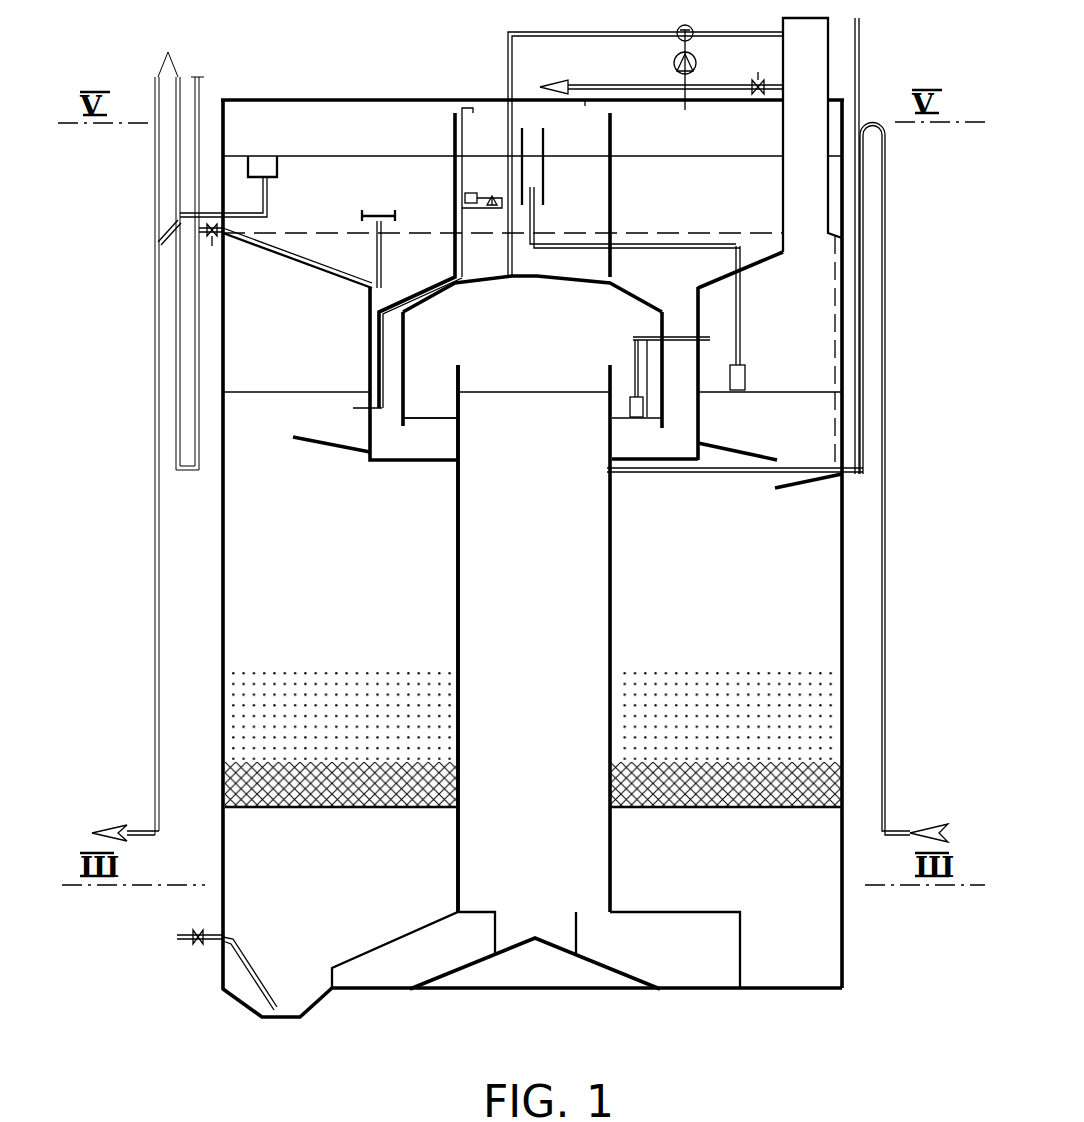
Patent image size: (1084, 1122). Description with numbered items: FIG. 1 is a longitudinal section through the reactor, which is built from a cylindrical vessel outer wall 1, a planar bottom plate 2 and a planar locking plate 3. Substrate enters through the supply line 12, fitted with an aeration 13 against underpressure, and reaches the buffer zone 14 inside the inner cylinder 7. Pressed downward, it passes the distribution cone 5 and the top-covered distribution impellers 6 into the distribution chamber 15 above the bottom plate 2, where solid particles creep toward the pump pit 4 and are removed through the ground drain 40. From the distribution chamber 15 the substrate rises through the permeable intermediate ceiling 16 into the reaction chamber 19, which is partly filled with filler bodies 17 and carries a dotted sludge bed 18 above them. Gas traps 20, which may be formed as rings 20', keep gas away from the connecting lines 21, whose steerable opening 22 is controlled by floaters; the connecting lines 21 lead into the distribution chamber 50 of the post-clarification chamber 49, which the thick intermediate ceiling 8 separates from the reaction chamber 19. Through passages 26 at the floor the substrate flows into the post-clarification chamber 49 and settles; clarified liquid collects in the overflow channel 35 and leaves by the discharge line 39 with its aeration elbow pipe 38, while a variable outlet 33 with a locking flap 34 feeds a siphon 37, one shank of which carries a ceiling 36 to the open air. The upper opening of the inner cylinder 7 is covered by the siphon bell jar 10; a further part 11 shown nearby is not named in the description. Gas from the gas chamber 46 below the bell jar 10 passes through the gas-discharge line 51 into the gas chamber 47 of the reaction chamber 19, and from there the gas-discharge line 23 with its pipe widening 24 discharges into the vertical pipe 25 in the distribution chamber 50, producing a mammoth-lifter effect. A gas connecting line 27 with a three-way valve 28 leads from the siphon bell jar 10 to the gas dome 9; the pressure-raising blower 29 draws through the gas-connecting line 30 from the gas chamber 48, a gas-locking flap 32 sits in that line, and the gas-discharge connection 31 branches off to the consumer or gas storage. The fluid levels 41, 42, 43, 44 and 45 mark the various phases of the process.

The vessel outer wall 1 is at (845, 960).
The bottom plate 2 is at (785, 992).
The locking plate 3 is at (322, 100).
The pump pit 4 is at (300, 1012).
The distribution cone 5 is at (535, 963).
The distribution impellers 6 is at (408, 939).
The inner cylinder 7 is at (461, 865).
The intermediate ceiling 8 is at (257, 249).
The gas dome 9 is at (812, 135).
The siphon bell jar 10 is at (405, 345).
The partition wall 11 is at (612, 133).
The supply line 12 is at (904, 483).
The aeration 13 is at (860, 42).
The buffer zone 14 is at (534, 638).
The distribution chamber 15 is at (719, 899).
The permeable intermediate ceiling 16 is at (668, 810).
The filler bodies 17 is at (533, 784).
The sludge bed 18 is at (534, 715).
The reaction chamber 19 is at (692, 644).
The gas traps 20 is at (331, 438).
The ring 20' is at (770, 464).
The connecting lines 21 is at (394, 303).
The steerable opening 22 is at (502, 196).
The gas-discharge line 23 is at (742, 318).
The pipe widening 24 is at (747, 378).
The vertical pipe 25 is at (543, 145).
The passages 26 is at (612, 283).
The gas connecting line 27 is at (512, 56).
The three-way valve 28 is at (685, 24).
The pressure-raising blower 29 is at (696, 58).
The gas-connecting line 30 is at (590, 104).
The gas-discharge connection 31 is at (575, 85).
The gas-locking flap 32 is at (762, 65).
The variable outlet 33 is at (395, 216).
The locking flap 34 is at (211, 243).
The overflow channel 35 is at (262, 172).
The ceiling 36 is at (201, 77).
The siphon 37 is at (183, 470).
The aeration elbow pipe 38 is at (170, 53).
The discharge line 39 is at (125, 822).
The ground drain 40 is at (183, 915).
The fluid level 41 is at (288, 392).
The fluid level 42 is at (637, 243).
The fluid level 43 is at (330, 156).
The fluid level 44 is at (520, 392).
The fluid level 45 is at (412, 418).
The gas chamber 46 is at (507, 331).
The gas chamber 47 is at (291, 329).
The gas chamber 48 is at (679, 138).
The post-clarification chamber 49 is at (709, 197).
The distribution chamber 50 is at (576, 214).
The gas-discharge line 51 is at (633, 337).